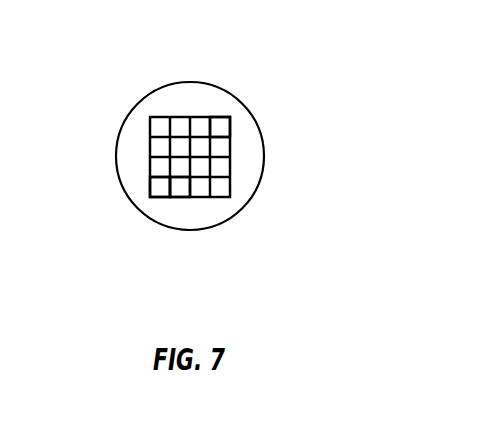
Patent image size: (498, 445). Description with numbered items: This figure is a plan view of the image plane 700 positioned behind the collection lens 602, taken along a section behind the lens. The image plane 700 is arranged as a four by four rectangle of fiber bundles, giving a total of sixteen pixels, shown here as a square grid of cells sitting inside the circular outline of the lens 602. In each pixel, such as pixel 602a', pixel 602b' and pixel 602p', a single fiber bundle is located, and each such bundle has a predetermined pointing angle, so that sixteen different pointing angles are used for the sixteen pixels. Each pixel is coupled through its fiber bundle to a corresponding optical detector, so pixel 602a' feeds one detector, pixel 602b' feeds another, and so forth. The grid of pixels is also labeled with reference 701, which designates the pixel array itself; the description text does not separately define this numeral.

The image plane 700 is at (210, 161).
The collection lens 602 is at (196, 142).
The pixel array grid 701 is at (149, 143).
The pixel 602p' is at (264, 109).
The pixel 602a' is at (114, 219).
The pixel 602b' is at (230, 220).